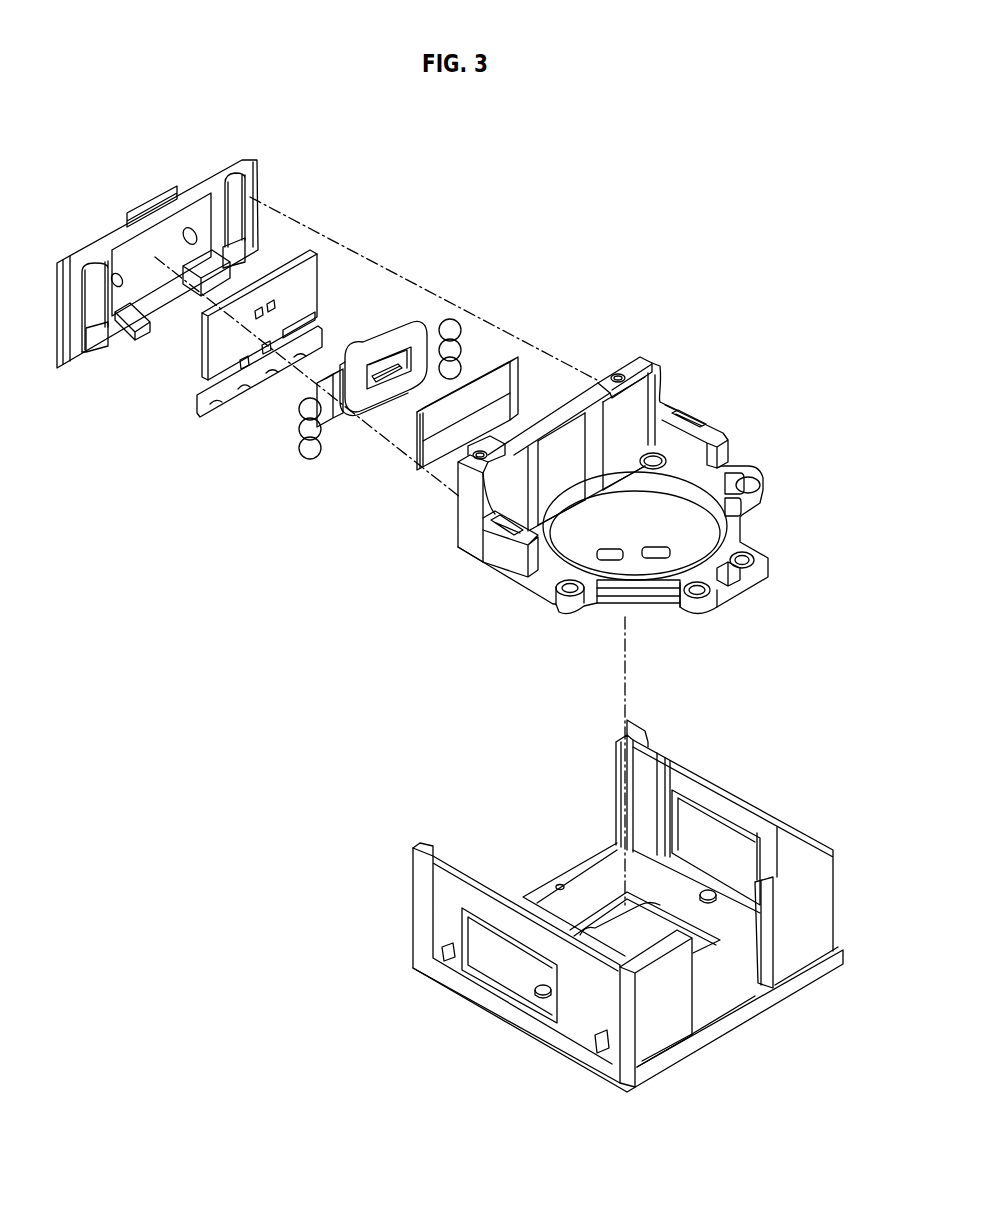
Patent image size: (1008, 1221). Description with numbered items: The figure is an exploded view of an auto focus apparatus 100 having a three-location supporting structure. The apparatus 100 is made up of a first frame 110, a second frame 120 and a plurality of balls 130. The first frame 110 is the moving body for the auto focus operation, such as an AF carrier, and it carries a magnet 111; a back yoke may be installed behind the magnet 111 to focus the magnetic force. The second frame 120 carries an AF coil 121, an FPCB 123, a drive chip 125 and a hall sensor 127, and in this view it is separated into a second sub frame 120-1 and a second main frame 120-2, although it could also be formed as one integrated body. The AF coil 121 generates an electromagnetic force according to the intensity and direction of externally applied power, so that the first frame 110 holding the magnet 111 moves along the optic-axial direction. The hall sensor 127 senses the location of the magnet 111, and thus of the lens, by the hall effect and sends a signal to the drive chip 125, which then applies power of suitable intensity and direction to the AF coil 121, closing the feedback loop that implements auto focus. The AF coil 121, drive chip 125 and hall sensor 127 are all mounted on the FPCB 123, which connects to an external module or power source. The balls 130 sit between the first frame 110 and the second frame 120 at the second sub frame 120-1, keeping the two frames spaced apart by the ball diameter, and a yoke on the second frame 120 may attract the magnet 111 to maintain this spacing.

The auto focus apparatus 100 is at (778, 370).
The first frame 110 is at (766, 475).
The magnet 111 is at (510, 383).
The second frame 120 is at (178, 928).
The second sub frame 120-1 is at (85, 375).
The second main frame 120-2 is at (390, 960).
The AF coil 121 is at (393, 332).
The FPCB 123 is at (307, 272).
The drive chip 125 is at (335, 420).
The hall sensor 127 is at (378, 383).
The balls 130 is at (307, 449).